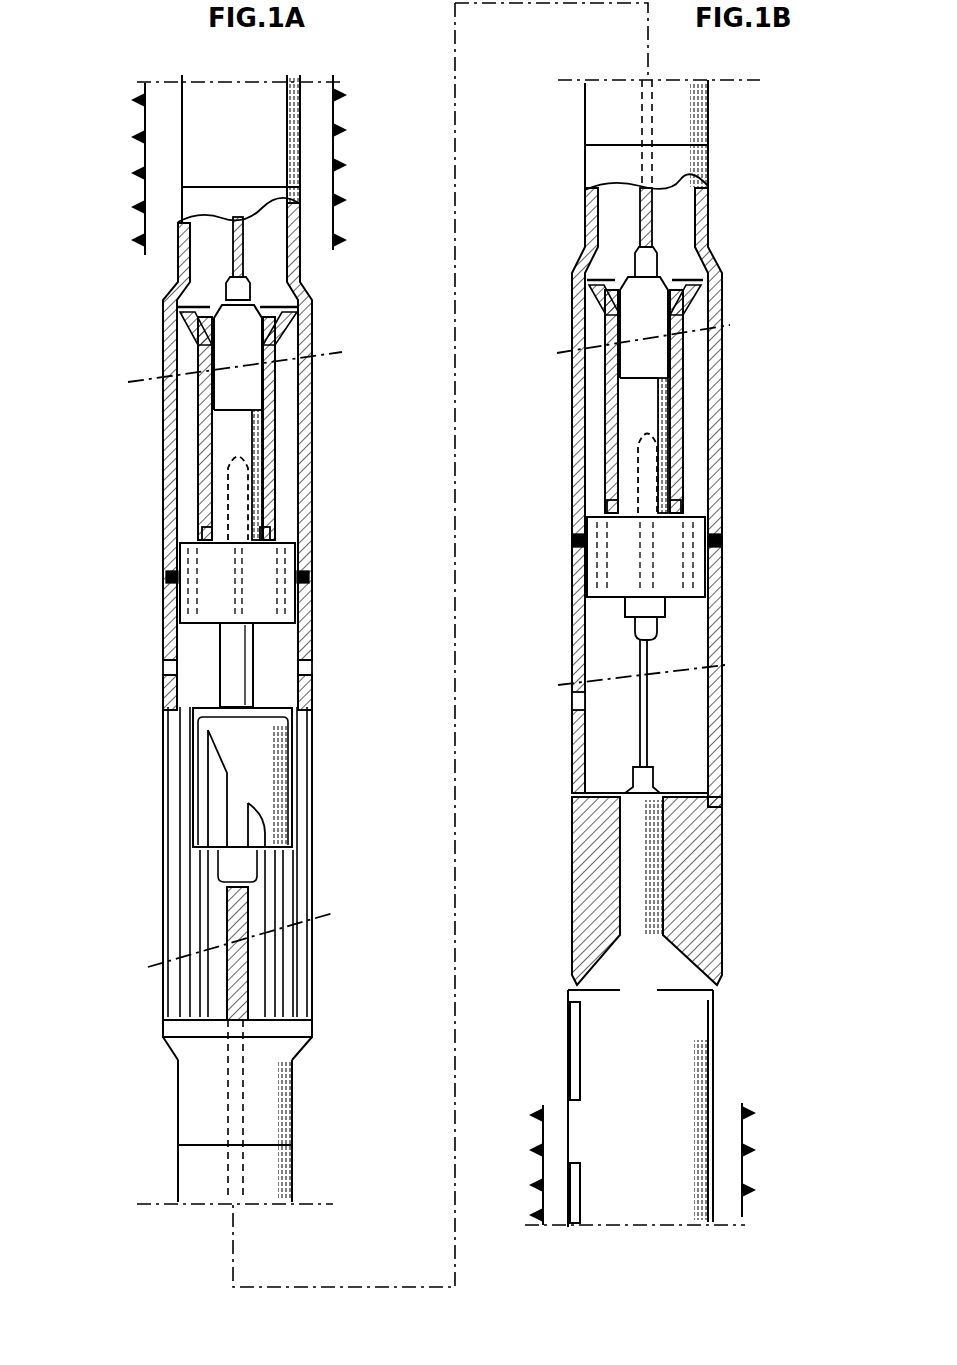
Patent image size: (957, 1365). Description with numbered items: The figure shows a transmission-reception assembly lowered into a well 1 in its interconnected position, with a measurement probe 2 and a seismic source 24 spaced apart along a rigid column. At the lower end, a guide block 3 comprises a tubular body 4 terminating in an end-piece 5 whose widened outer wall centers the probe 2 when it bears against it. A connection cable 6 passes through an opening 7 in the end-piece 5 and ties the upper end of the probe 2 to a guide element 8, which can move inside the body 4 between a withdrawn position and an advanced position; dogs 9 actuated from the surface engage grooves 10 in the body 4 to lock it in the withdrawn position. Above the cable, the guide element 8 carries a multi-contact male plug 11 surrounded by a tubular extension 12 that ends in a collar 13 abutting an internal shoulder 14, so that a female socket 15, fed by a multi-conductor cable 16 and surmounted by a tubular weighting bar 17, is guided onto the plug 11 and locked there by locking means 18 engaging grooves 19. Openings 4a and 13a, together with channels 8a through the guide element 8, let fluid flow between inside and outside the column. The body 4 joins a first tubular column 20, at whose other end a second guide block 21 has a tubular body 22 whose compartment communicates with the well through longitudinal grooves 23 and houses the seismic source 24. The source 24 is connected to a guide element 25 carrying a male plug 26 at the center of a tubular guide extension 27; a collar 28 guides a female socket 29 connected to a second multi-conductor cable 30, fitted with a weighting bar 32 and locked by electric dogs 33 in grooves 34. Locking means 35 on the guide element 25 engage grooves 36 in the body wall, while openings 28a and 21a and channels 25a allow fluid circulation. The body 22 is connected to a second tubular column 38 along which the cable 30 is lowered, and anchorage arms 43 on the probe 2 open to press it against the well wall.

In FIG. 1A, the well 1 is at (165, 118).
In FIG. 1B, the well 1 is at (728, 1148).
In FIG. 1B, the measurement probe 2 is at (678, 1058).
In FIG. 1B, the guide block 3 is at (800, 520).
In FIG. 1B, the tubular body 4 is at (575, 663).
In FIG. 1B, the opening 4a is at (578, 702).
In FIG. 1B, the end-piece 5 is at (590, 903).
In FIG. 1B, the connection cable 6 is at (640, 725).
In FIG. 1B, the opening 7 is at (620, 796).
In FIG. 1B, the guide element 8 is at (675, 572).
In FIG. 1B, the channels 8a is at (690, 597).
In FIG. 1B, the dogs 9 is at (580, 542).
In FIG. 1B, the grooves 10 is at (720, 541).
In FIG. 1B, the multi-contact male plug 11 is at (640, 468).
In FIG. 1B, the tubular extension 12 is at (615, 425).
In FIG. 1B, the collar 13 is at (590, 310).
In FIG. 1B, the opening 13a is at (700, 312).
In FIG. 1B, the internal shoulder 14 is at (600, 268).
In FIG. 1B, the female socket 15 is at (655, 405).
In FIG. 1A, the multi-conductor cable 16 is at (227, 982).
In FIG. 1B, the multi-conductor cable 16 is at (655, 206).
In FIG. 1B, the tubular weighting bar 17 is at (665, 352).
In FIG. 1B, the locking means 18 is at (605, 505).
In FIG. 1B, the grooves 19 is at (690, 508).
In FIG. 1A, the first tubular column 20 is at (190, 1175).
In FIG. 1B, the first tubular column 20 is at (685, 108).
In FIG. 1A, the second guide block 21 is at (120, 625).
In FIG. 1A, the openings 21a is at (305, 664).
In FIG. 1A, the tubular body 22 is at (168, 476).
In FIG. 1A, the longitudinal grooves 23 is at (215, 865).
In FIG. 1A, the seismic source 24 is at (265, 757).
In FIG. 1A, the guide element 25 is at (210, 572).
In FIG. 1A, the channels 25a is at (285, 630).
In FIG. 1A, the multi-contact male plug 26 is at (240, 493).
In FIG. 1A, the tubular guide extension 27 is at (200, 423).
In FIG. 1A, the collar 28 is at (180, 328).
In FIG. 1A, the openings 28a is at (285, 343).
In FIG. 1A, the multi-contact female socket 29 is at (255, 437).
In FIG. 1A, the second multi-conductor cable 30 is at (240, 228).
In FIG. 1A, the weighting bar 32 is at (240, 398).
In FIG. 1A, the electric dogs 33 is at (200, 530).
In FIG. 1A, the grooves 34 is at (235, 292).
In FIG. 1A, the locking means 35 is at (170, 580).
In FIG. 1A, the grooves 36 is at (305, 576).
In FIG. 1A, the second tubular column 38 is at (195, 152).
In FIG. 1B, the anchorage arms 43 is at (577, 1195).